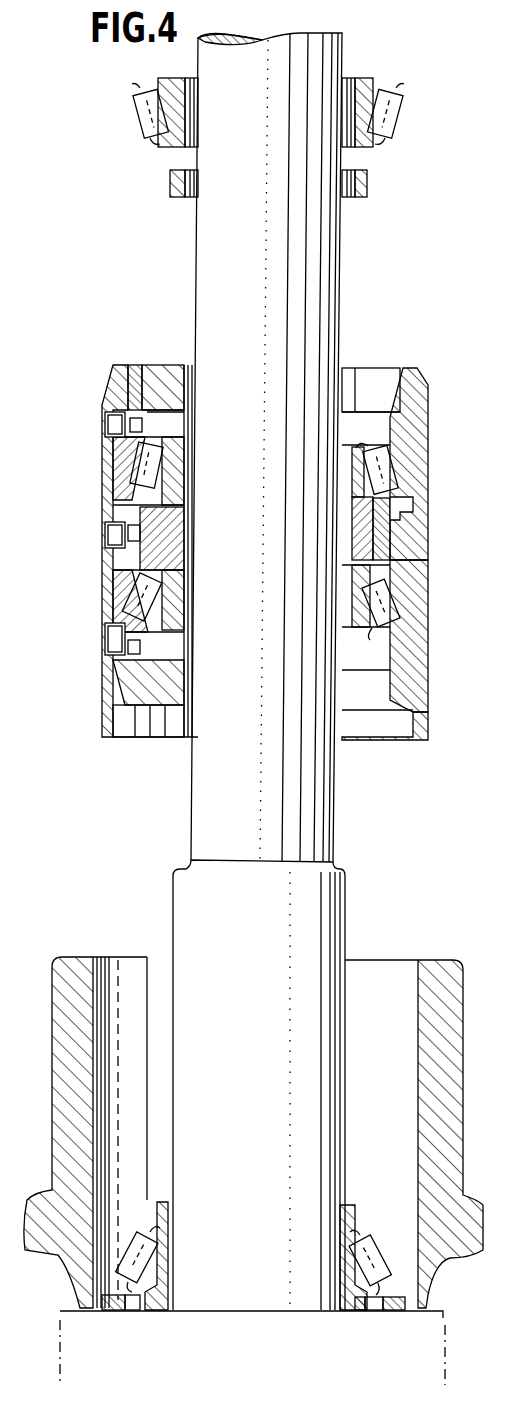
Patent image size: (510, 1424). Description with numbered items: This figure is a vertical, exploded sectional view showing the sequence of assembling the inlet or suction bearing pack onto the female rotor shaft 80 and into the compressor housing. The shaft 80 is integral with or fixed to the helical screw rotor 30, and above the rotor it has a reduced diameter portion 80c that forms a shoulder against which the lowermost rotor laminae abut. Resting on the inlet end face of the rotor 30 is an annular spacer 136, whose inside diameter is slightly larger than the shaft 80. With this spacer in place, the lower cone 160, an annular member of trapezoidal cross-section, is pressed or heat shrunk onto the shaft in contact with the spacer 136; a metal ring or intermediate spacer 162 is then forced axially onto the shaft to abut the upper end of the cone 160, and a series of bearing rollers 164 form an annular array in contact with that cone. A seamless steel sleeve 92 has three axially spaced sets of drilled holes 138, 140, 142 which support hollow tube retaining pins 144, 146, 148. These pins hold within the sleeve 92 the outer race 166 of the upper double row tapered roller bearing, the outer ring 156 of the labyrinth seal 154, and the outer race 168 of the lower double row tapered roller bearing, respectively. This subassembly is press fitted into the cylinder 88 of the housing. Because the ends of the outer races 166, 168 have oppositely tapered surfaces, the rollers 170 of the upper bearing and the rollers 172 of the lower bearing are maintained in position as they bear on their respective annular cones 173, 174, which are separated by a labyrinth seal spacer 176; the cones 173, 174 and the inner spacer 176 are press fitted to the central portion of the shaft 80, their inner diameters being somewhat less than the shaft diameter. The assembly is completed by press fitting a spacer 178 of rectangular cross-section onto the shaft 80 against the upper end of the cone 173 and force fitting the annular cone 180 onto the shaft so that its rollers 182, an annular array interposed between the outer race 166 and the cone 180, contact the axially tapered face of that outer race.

The helical screw rotor 30 is at (433, 1328).
The shaft 80 is at (328, 1092).
The reduced diameter portion 80c is at (322, 838).
The cylinder 88 is at (448, 1093).
The sleeve 92 is at (421, 714).
The annular spacer 136 is at (348, 1312).
The drilled holes 138 is at (108, 437).
The drilled holes 140 is at (105, 542).
The drilled holes 142 is at (106, 650).
The retaining pins 144 is at (108, 412).
The retaining pins 146 is at (106, 530).
The retaining pins 148 is at (106, 637).
The labyrinth seal 154 is at (400, 513).
The labyrinth seal outer ring 156 is at (410, 544).
The lower cone 160 is at (352, 1237).
The intermediate spacer 162 is at (354, 1212).
The bearing rollers 164 is at (375, 1267).
The outer race 166 is at (405, 431).
The outer race 168 is at (403, 648).
The rollers 170 is at (382, 478).
The rollers 172 is at (416, 607).
The annular cone 173 is at (175, 472).
The annular cone 174 is at (173, 600).
The labyrinth seal spacer 176 is at (172, 548).
The spacer 178 is at (370, 193).
The annular cone 180 is at (377, 80).
The rollers 182 is at (400, 118).